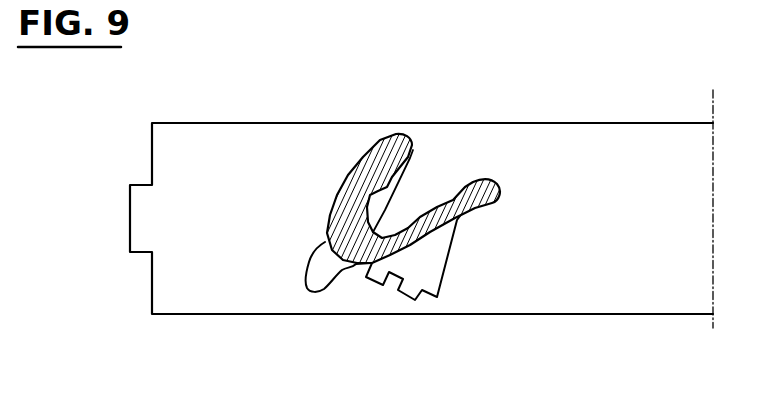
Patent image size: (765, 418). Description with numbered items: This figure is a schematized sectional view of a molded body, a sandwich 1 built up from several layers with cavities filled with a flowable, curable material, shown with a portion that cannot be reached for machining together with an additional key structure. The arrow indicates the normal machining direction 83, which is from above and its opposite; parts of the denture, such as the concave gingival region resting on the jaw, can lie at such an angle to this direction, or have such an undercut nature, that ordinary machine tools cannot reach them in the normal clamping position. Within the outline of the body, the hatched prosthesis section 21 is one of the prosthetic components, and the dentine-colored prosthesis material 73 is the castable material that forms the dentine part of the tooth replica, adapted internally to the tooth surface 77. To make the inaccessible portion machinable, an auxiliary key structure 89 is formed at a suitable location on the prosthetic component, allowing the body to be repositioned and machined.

The sandwich 1 is at (603, 80).
The prosthesis section 21 is at (415, 200).
The dentine-colored prosthesis material 73 is at (387, 190).
The tooth surface 77 is at (321, 275).
The normal machining direction 83 is at (421, 78).
The auxiliary key structure 89 is at (415, 275).